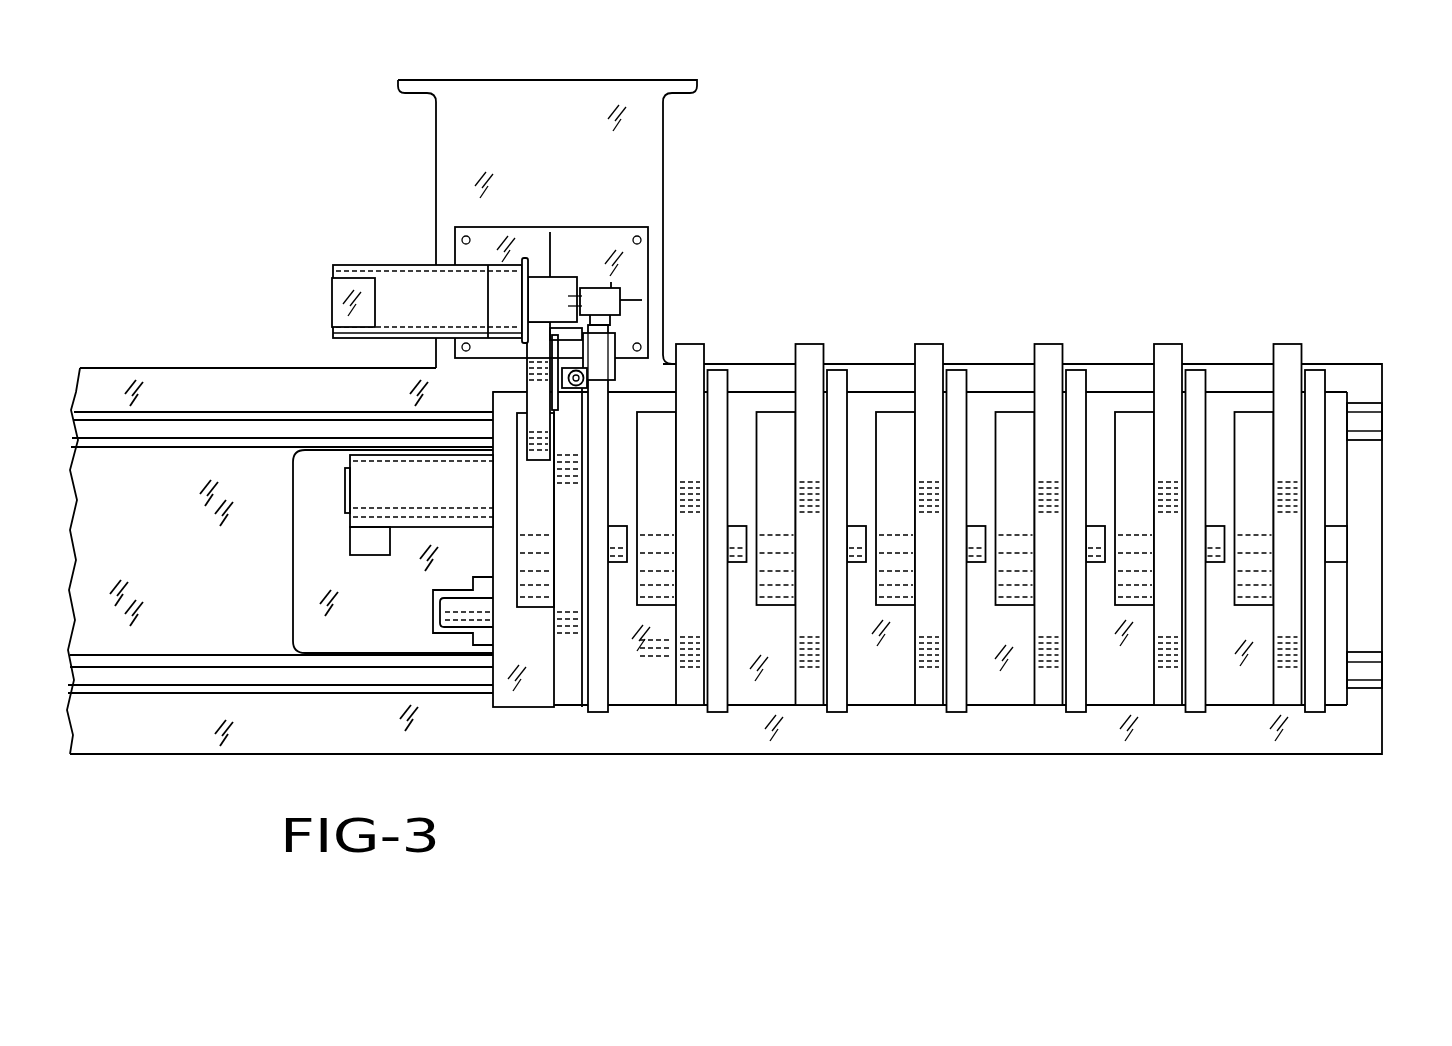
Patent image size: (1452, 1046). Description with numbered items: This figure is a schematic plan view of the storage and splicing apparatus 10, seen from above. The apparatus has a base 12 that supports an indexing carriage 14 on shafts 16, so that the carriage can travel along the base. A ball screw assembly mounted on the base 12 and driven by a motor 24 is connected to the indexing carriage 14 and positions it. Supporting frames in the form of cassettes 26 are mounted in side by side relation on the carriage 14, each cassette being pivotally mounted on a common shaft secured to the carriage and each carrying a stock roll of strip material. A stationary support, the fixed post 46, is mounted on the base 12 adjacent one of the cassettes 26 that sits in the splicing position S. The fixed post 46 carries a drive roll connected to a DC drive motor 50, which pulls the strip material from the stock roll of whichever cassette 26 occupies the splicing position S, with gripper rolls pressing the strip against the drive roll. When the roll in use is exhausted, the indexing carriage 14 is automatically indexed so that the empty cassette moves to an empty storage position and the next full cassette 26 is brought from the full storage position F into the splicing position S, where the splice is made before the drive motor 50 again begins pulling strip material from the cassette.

The storage and splicing apparatus 10 is at (706, 250).
The base 12 is at (1360, 379).
The indexing carriage 14 is at (1240, 684).
The shafts 16 is at (1371, 422).
The motor 24 is at (404, 501).
The cassettes 26 is at (813, 353).
The fixed post 46 is at (552, 293).
The DC drive motor 50 is at (404, 312).
The splicing position S is at (572, 688).
The full storage position F is at (685, 688).